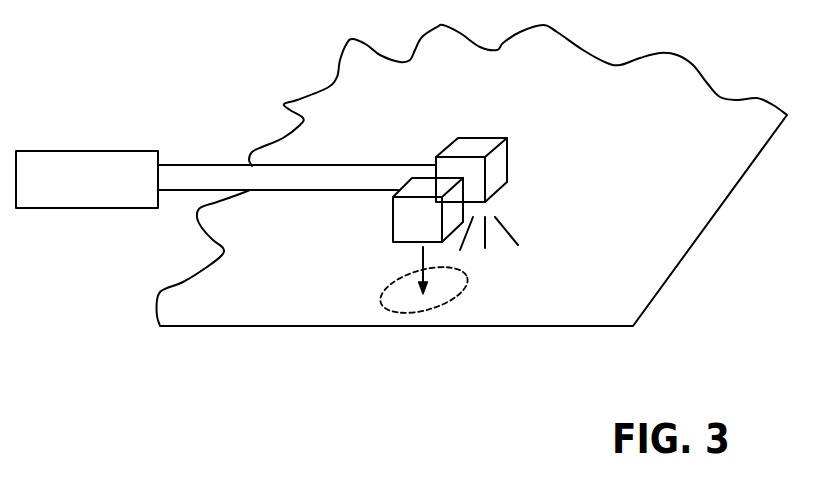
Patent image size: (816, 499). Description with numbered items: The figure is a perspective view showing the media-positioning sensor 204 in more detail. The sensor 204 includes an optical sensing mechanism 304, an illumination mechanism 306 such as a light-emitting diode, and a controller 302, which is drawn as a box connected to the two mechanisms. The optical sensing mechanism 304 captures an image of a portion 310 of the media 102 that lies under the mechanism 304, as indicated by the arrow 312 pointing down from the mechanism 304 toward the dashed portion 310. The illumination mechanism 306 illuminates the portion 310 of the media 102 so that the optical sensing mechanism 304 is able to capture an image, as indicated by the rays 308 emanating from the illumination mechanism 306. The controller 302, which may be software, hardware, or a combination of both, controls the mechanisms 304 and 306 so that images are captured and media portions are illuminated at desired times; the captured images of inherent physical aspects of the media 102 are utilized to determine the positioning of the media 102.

The media 102 is at (733, 146).
The media-positioning sensor 204 is at (149, 386).
The controller 302 is at (132, 151).
The optical sensing mechanism 304 is at (393, 216).
The illumination mechanism 306 is at (487, 141).
The rays 308 is at (510, 230).
The portion of the media 310 is at (390, 304).
The arrow 312 is at (423, 260).